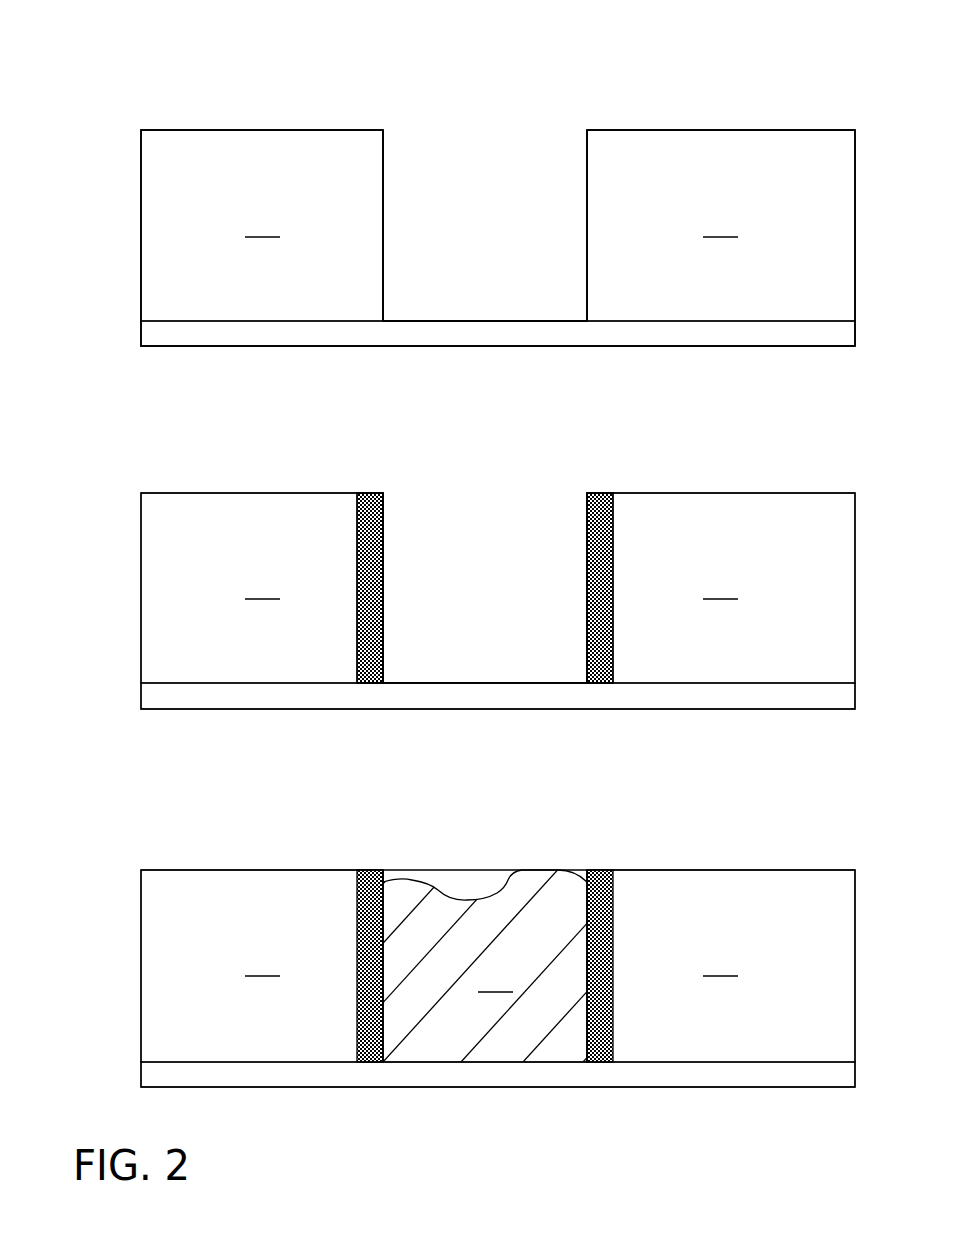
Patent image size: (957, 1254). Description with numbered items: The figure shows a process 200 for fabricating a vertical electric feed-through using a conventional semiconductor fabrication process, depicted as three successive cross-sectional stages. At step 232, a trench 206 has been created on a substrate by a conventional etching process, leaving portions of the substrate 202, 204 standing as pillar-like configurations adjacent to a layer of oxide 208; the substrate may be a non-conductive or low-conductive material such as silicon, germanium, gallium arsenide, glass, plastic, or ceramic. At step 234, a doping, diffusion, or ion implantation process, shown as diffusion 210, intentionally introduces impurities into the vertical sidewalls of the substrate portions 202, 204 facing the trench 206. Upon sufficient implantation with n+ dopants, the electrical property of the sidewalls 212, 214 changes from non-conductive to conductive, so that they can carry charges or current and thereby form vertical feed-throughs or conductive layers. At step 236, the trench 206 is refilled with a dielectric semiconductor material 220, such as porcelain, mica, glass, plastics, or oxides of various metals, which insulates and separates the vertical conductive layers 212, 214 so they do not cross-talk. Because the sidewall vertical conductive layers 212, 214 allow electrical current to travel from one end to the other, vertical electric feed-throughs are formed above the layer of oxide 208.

The process 200 is at (715, 65).
The substrate portion 202 is at (262, 596).
The substrate portion 204 is at (721, 596).
The trench 206 is at (473, 130).
The layer of oxide 208 is at (377, 346).
The diffusion 210 is at (385, 658).
The sidewall conductive layer 212 is at (370, 505).
The sidewall conductive layer 214 is at (602, 492).
The dielectric semiconductor material 220 is at (502, 952).
The step 232 is at (102, 245).
The step 234 is at (102, 600).
The step 236 is at (102, 958).